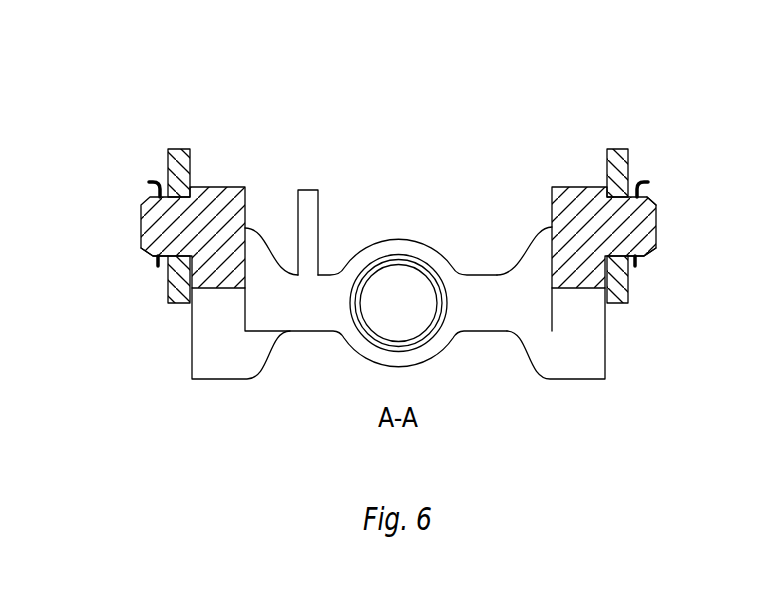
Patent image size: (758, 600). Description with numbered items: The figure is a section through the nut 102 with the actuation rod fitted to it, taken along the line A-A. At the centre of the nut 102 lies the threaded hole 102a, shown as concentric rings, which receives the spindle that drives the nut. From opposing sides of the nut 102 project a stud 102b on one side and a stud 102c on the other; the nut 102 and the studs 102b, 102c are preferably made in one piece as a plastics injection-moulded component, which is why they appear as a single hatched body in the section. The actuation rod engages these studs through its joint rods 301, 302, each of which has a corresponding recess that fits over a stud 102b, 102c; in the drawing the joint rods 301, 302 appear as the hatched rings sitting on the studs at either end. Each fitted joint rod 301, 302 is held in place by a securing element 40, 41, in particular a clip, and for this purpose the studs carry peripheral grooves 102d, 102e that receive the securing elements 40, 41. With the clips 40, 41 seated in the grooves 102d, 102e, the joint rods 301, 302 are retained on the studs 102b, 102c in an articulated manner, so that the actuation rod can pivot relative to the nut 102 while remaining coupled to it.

The nut 102 is at (318, 302).
The threaded hole 102a is at (365, 317).
The stud 102b is at (152, 258).
The stud 102c is at (613, 228).
The peripheral groove 102d is at (140, 212).
The peripheral groove 102e is at (655, 216).
The joint rod 301 is at (612, 158).
The joint rod 302 is at (177, 168).
The securing element 40 is at (148, 180).
The securing element 41 is at (642, 180).